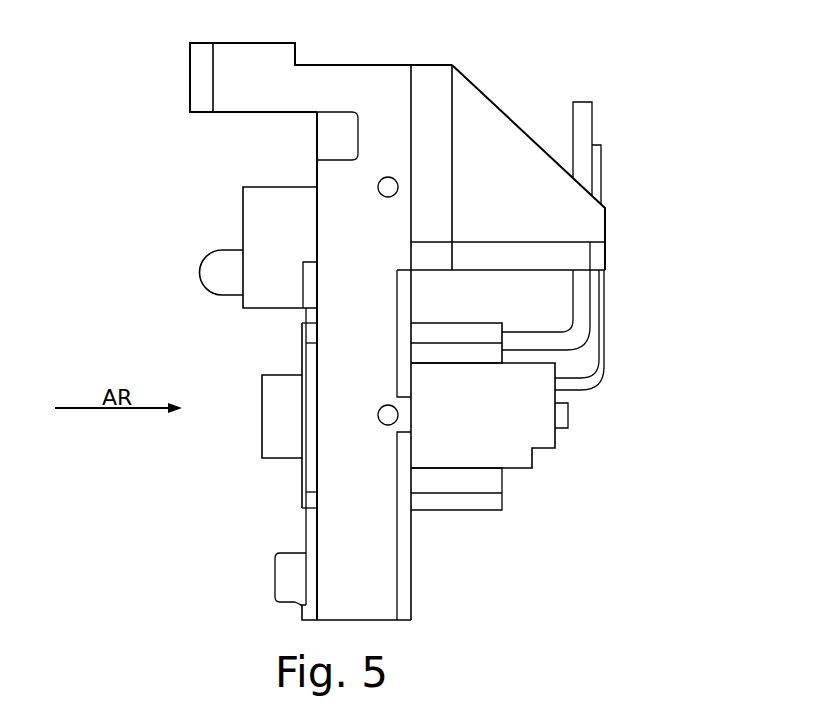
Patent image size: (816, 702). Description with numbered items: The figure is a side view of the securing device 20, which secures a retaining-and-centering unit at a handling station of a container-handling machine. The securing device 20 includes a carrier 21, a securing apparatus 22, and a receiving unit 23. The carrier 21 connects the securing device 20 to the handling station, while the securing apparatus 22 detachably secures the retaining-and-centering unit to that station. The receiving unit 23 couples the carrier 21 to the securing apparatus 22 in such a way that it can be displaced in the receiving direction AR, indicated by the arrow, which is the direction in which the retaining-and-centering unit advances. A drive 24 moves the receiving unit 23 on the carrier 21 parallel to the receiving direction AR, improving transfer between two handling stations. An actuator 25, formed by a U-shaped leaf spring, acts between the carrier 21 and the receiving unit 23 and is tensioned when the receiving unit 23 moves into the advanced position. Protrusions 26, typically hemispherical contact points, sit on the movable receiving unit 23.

The securing device 20 is at (612, 124).
The carrier 21 is at (473, 113).
The securing apparatus 22 is at (280, 468).
The receiving unit 23 is at (260, 205).
The drive 24 is at (452, 483).
The actuator 25 is at (303, 523).
The protrusions 26 is at (213, 271).